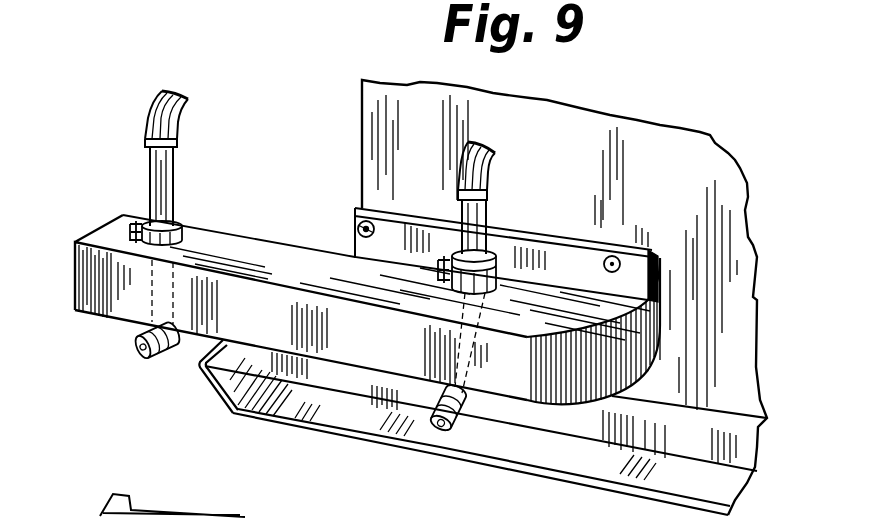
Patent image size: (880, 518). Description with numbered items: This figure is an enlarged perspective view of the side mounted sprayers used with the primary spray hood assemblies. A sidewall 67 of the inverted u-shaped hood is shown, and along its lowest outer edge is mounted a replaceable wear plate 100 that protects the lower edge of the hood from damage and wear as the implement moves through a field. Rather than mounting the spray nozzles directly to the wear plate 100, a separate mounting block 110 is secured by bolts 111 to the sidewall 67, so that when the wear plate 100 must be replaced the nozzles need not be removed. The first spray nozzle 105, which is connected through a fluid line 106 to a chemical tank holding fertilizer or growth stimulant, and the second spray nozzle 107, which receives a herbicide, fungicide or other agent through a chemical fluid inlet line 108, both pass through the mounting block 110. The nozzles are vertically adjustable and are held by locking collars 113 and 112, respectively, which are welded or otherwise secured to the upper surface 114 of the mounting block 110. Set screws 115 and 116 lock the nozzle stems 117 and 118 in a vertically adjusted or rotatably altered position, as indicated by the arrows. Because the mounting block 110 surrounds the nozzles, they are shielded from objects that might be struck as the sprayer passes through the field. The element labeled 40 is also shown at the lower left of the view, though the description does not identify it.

The strip 40 is at (188, 487).
The sidewall 67 is at (378, 104).
The wear plate 100 is at (480, 447).
The first spray nozzle 105 is at (428, 434).
The fluid line 106 is at (494, 152).
The second spray nozzle 107 is at (134, 360).
The chemical fluid inlet line 108 is at (229, 58).
The mounting block 110 is at (104, 306).
The bolts 111 is at (358, 226).
The locking collar 112 is at (182, 230).
The locking collar 113 is at (497, 284).
The upper surface 114 is at (270, 210).
The set screw 115 is at (136, 233).
The set screw 116 is at (441, 260).
The nozzle stem 117 is at (148, 166).
The nozzle stem 118 is at (489, 207).